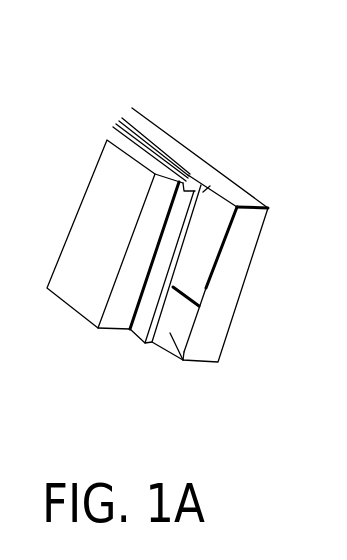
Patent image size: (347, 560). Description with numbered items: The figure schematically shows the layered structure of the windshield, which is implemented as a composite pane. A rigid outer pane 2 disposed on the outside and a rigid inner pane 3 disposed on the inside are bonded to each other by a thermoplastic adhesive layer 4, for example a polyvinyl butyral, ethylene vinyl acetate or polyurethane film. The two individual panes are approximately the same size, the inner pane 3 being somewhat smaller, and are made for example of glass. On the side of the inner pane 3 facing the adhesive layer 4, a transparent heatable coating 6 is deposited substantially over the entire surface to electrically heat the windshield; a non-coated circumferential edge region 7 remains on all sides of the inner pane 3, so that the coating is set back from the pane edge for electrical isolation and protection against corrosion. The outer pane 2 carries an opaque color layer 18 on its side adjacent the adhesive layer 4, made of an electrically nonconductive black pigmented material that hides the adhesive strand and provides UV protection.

The outer pane 2 is at (82, 320).
The inner pane 3 is at (215, 332).
The thermoplastic adhesive layer 4 is at (203, 192).
The heatable coating 6 is at (212, 247).
The non-coated circumferential edge region 7 is at (182, 344).
The opaque color layer 18 is at (186, 195).